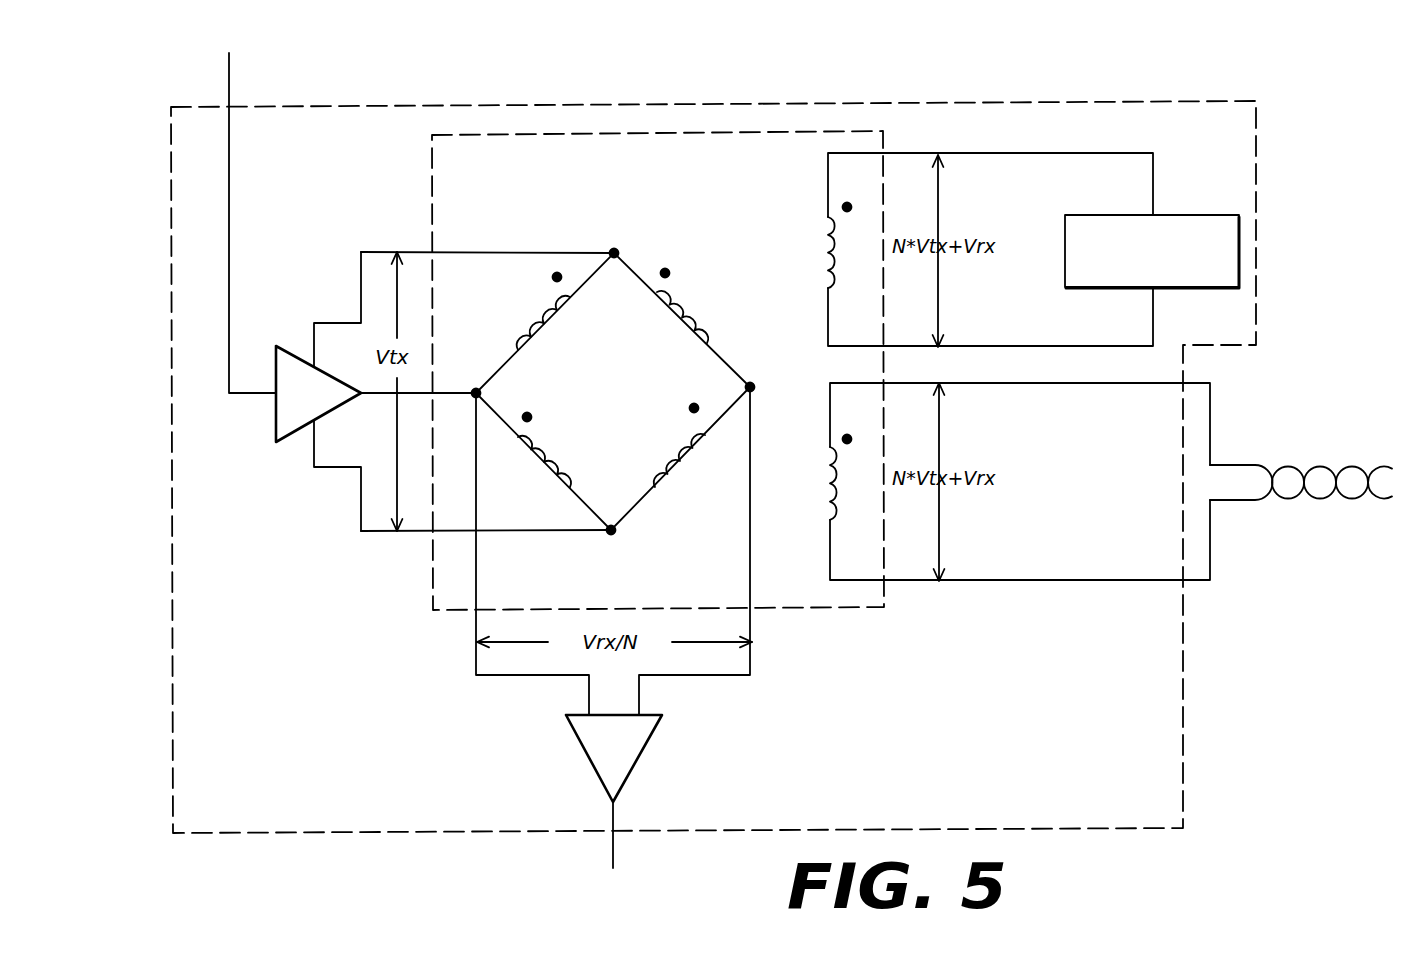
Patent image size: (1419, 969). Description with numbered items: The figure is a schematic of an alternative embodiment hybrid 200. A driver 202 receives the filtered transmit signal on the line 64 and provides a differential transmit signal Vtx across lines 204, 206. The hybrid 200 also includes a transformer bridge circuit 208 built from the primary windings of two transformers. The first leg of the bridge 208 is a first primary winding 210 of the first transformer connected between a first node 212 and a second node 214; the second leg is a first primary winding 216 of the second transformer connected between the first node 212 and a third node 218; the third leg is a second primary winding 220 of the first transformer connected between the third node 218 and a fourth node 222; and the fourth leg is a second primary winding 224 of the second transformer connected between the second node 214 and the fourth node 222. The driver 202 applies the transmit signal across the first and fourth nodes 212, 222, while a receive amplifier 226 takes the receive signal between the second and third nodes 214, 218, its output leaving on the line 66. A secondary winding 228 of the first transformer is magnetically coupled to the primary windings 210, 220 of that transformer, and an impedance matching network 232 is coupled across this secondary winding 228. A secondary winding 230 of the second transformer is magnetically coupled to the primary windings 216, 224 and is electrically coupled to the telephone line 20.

The telephone line 20 is at (1320, 499).
The line 64 is at (231, 62).
The receive output line 66 is at (612, 840).
The hybrid 200 is at (1072, 100).
The driver 202 is at (288, 410).
The line 204 is at (377, 250).
The line 206 is at (386, 538).
The transformer bridge circuit 208 is at (883, 131).
The first primary winding of the first transformer 210 is at (520, 318).
The first node 212 is at (614, 253).
The second node 214 is at (478, 393).
The first primary winding of the second transformer 216 is at (692, 305).
The third node 218 is at (750, 387).
The second primary winding of the first transformer 220 is at (662, 449).
The fourth node 222 is at (611, 530).
The second primary winding of the second transformer 224 is at (545, 448).
The receive amplifier 226 is at (627, 771).
The secondary winding of the first transformer 228 is at (835, 252).
The secondary winding of the second transformer 230 is at (830, 470).
The impedance matching network 232 is at (1160, 215).